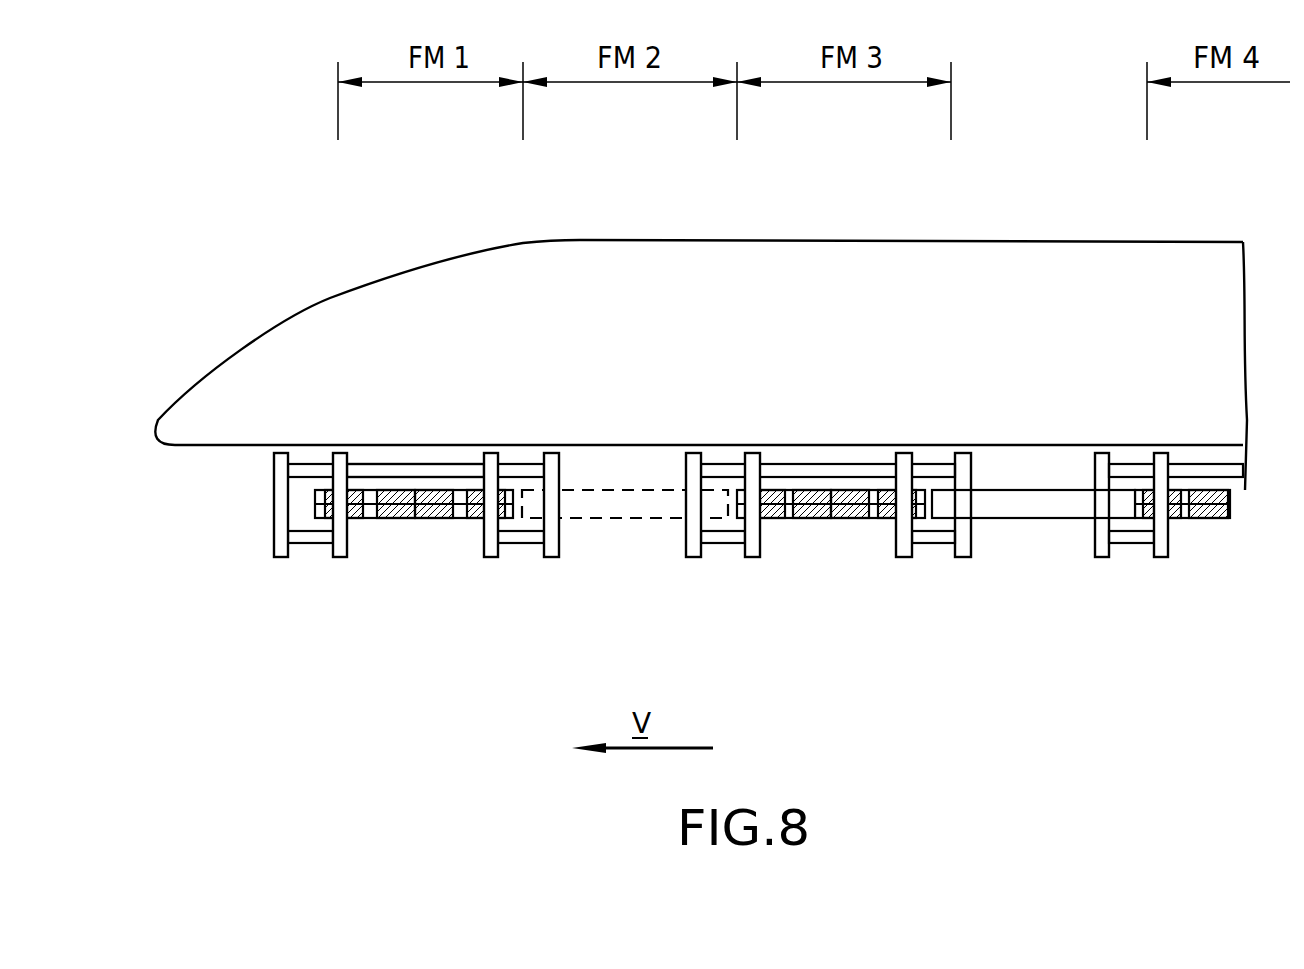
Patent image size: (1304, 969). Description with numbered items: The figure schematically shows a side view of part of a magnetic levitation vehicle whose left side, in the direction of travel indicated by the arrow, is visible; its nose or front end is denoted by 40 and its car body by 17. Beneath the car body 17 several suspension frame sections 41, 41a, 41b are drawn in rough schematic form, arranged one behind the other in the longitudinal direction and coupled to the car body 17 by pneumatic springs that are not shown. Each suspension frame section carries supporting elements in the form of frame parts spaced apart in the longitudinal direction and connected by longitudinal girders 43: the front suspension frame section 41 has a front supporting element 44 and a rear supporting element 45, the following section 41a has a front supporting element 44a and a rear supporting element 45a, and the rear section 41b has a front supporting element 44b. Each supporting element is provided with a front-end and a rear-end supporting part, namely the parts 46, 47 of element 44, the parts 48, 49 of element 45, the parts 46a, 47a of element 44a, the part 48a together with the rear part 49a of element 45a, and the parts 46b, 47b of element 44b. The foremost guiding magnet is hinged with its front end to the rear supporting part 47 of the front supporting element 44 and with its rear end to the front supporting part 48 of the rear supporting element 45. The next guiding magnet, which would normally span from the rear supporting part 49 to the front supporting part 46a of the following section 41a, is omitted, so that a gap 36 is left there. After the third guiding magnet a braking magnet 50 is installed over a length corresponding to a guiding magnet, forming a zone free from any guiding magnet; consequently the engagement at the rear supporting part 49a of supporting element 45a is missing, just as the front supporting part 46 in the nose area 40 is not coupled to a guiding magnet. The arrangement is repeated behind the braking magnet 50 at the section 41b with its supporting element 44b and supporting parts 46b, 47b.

The car body 17 is at (1035, 313).
The gap 36 is at (608, 497).
The nose 40 is at (215, 400).
The suspension frame section 41 is at (425, 463).
The suspension frame section 41a is at (816, 462).
The suspension frame section 41b is at (1202, 463).
The longitudinal girder 43 is at (367, 463).
The front supporting element 44 is at (302, 500).
The front supporting element 44a is at (720, 483).
The front supporting element 44b is at (1128, 520).
The rear supporting element 45 is at (517, 523).
The rear supporting element 45a is at (928, 528).
The front-end supporting part 46 is at (280, 547).
The front-end supporting part 46a is at (695, 555).
The front-end supporting part 46b is at (1100, 557).
The rear-end supporting part 47 is at (337, 545).
The rear-end supporting part 47a is at (750, 545).
The rear-end supporting part 47b is at (1162, 530).
The front-end supporting part 48 is at (488, 558).
The front-end supporting part 48a is at (892, 548).
The rear-end supporting part 49 is at (552, 557).
The rear-end supporting part 49a is at (962, 530).
The braking magnet 50 is at (1041, 522).